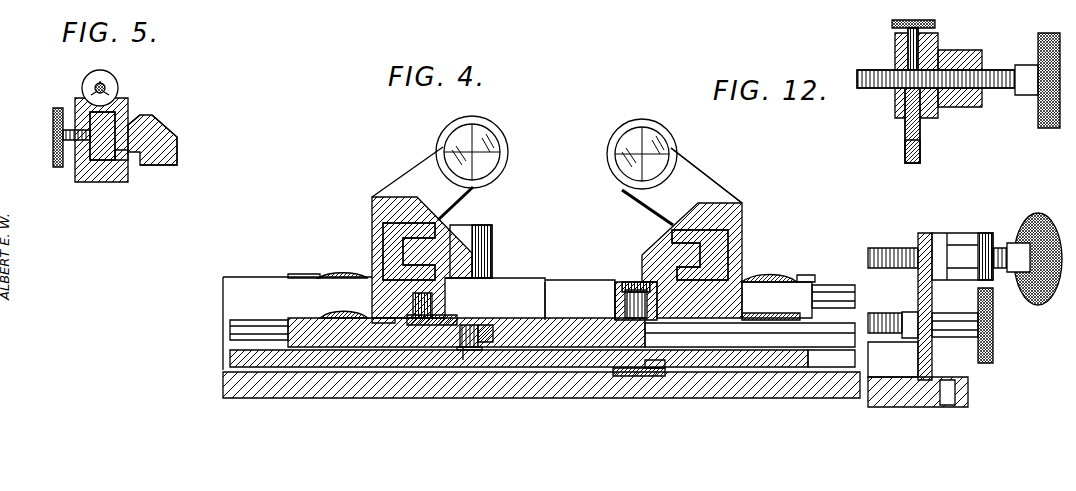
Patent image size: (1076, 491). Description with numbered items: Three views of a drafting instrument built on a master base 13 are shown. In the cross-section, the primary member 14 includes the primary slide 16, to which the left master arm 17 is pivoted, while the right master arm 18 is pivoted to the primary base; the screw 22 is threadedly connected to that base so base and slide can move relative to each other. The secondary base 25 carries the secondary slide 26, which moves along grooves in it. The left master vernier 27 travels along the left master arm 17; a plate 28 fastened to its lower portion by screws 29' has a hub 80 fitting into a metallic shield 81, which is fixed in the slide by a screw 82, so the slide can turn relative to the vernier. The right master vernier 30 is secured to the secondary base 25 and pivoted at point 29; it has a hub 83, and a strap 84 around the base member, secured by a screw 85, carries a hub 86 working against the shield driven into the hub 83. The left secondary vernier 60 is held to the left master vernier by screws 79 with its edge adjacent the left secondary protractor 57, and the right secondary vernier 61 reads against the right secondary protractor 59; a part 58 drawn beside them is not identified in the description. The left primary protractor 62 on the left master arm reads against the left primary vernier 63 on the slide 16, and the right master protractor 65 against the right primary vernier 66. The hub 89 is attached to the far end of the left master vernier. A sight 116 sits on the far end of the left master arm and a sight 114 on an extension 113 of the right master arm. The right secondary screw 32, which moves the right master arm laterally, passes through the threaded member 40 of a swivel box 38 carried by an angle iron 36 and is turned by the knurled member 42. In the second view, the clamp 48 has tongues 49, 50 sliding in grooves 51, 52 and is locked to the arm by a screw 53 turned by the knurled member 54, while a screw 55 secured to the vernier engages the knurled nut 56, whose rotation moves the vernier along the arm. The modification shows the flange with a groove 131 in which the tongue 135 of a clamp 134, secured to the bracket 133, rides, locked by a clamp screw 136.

In FIG. 4, the master base 13 is at (340, 386).
In FIG. 4, the primary member 14 is at (243, 283).
In FIG. 4, the primary slide 16 is at (836, 296).
In FIG. 5, the left master arm 17 is at (177, 145).
In FIG. 4, the left master arm 17 is at (395, 240).
In FIG. 4, the right master arm 18 is at (720, 241).
In FIG. 4, the screw 22 is at (888, 313).
In FIG. 4, the secondary base 25 is at (230, 358).
In FIG. 4, the secondary slide 26 is at (545, 295).
In FIG. 4, the left master vernier 27 is at (390, 197).
In FIG. 4, the plate 28 is at (470, 326).
In FIG. 4, the pivot point 29 is at (632, 257).
In FIG. 4, the screws 29' is at (449, 299).
In FIG. 4, the right master vernier 30 is at (736, 204).
In FIG. 4, the right secondary screw 32 is at (882, 250).
In FIG. 12, the right secondary screw 32 is at (870, 72).
In FIG. 4, the angle iron 36 is at (922, 356).
In FIG. 12, the angle iron 36 is at (905, 153).
In FIG. 4, the swivel box 38 is at (968, 243).
In FIG. 4, the threaded member 40 is at (956, 250).
In FIG. 4, the knurled member 42 is at (1038, 304).
In FIG. 12, the knurled member 42 is at (1046, 34).
In FIG. 5, the clamp 48 is at (82, 181).
In FIG. 5, the tongue 49 is at (130, 116).
In FIG. 5, the tongue 50 is at (118, 161).
In FIG. 5, the groove 51 is at (147, 116).
In FIG. 5, the groove 52 is at (133, 160).
In FIG. 5, the screw 53 is at (70, 129).
In FIG. 5, the knurled member 54 is at (58, 132).
In FIG. 5, the screw 55 is at (97, 83).
In FIG. 5, the knurled nut 56 is at (108, 82).
In FIG. 4, the left secondary protractor 57 is at (300, 320).
In FIG. 4, the rod 58 is at (290, 325).
In FIG. 4, the right secondary protractor 59 is at (786, 315).
In FIG. 4, the left secondary vernier 60 is at (336, 313).
In FIG. 4, the right secondary vernier 61 is at (772, 314).
In FIG. 4, the left primary protractor 62 is at (345, 272).
In FIG. 4, the left primary vernier 63 is at (300, 273).
In FIG. 4, the right master protractor 65 is at (757, 276).
In FIG. 4, the right primary vernier 66 is at (805, 276).
In FIG. 4, the screws 79 is at (385, 292).
In FIG. 4, the hub 80 is at (486, 326).
In FIG. 4, the metallic shield 81 is at (505, 332).
In FIG. 4, the screw 82 is at (463, 350).
In FIG. 4, the hub 83 is at (616, 283).
In FIG. 4, the strap 84 is at (622, 378).
In FIG. 4, the screw 85 is at (657, 372).
In FIG. 4, the hub 86 is at (624, 308).
In FIG. 4, the hub 89 is at (482, 230).
In FIG. 4, the extension 113 is at (685, 186).
In FIG. 4, the sight 114 is at (636, 130).
In FIG. 4, the sight 116 is at (506, 144).
In FIG. 12, the groove 131 is at (921, 117).
In FIG. 12, the bracket 133 is at (965, 53).
In FIG. 12, the clamp 134 is at (895, 46).
In FIG. 12, the tongue 135 is at (895, 112).
In FIG. 12, the clamp screw 136 is at (935, 25).